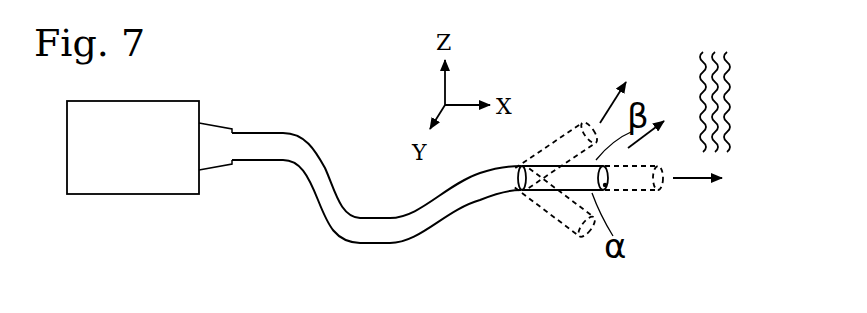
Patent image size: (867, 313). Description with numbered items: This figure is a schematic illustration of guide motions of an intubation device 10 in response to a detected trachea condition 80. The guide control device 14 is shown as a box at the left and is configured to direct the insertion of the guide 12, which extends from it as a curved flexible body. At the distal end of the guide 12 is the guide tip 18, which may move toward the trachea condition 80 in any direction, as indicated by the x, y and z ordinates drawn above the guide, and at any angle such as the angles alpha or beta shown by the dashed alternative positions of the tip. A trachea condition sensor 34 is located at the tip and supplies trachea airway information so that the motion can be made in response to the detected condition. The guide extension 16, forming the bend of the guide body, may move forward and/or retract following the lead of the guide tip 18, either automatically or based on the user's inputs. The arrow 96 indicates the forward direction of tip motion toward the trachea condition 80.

The intubation device 10 is at (307, 35).
The guide 12 is at (334, 161).
The guide control device 14 is at (134, 99).
The guide extension 16 is at (372, 234).
The guide tip 18 is at (558, 207).
The trachea condition sensor 34 is at (607, 186).
The trachea condition 80 is at (728, 88).
The output beam direction 96 is at (697, 180).